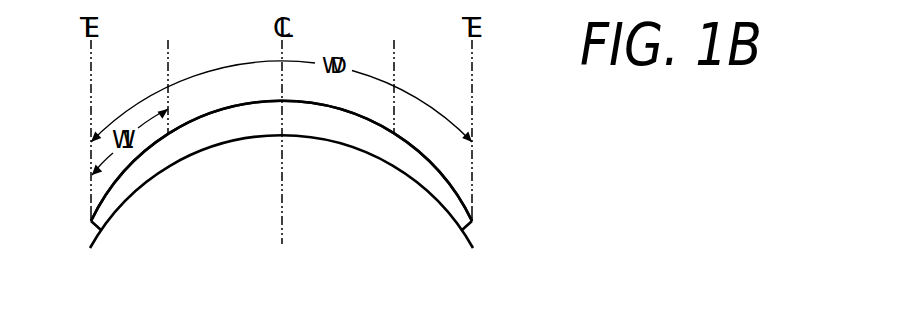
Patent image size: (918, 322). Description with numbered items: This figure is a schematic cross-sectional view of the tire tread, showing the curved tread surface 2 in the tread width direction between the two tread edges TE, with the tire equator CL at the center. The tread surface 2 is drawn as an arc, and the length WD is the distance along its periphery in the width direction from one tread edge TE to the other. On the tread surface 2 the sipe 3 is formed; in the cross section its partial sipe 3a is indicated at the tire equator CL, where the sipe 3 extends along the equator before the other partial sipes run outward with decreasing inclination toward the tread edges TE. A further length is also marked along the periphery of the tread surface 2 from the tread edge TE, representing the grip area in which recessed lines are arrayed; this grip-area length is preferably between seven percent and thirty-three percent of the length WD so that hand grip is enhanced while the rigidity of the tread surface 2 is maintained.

The tread surface 2 is at (452, 187).
The partial sipe 3a is at (280, 98).
The sipe 3 is at (280, 98).